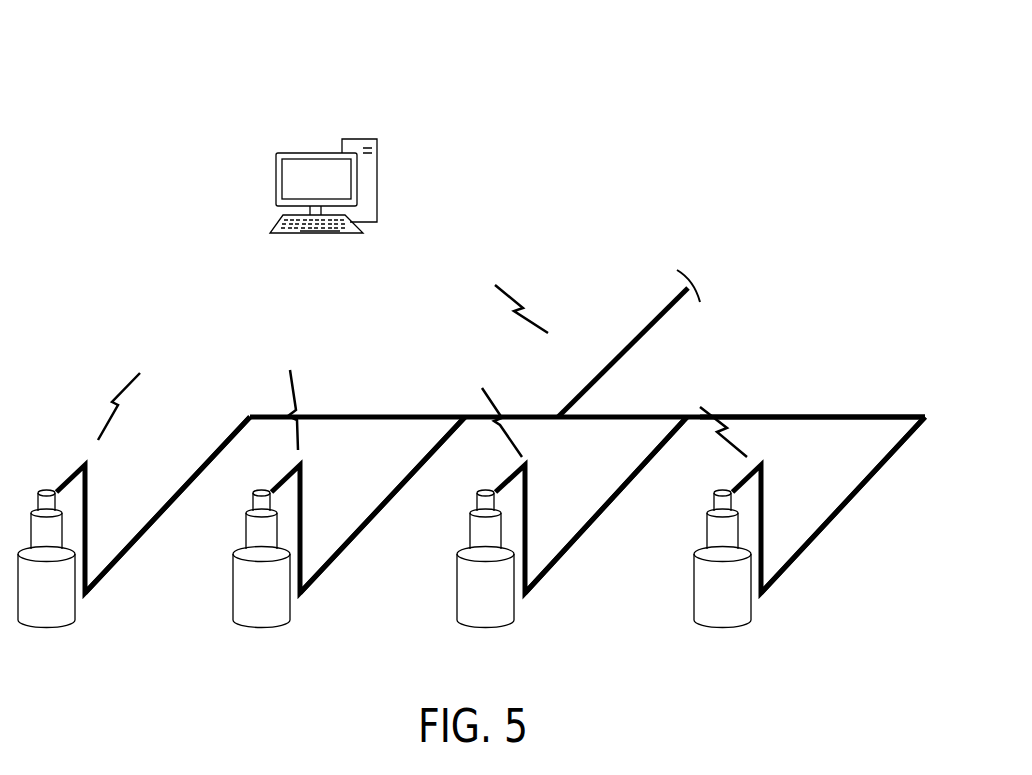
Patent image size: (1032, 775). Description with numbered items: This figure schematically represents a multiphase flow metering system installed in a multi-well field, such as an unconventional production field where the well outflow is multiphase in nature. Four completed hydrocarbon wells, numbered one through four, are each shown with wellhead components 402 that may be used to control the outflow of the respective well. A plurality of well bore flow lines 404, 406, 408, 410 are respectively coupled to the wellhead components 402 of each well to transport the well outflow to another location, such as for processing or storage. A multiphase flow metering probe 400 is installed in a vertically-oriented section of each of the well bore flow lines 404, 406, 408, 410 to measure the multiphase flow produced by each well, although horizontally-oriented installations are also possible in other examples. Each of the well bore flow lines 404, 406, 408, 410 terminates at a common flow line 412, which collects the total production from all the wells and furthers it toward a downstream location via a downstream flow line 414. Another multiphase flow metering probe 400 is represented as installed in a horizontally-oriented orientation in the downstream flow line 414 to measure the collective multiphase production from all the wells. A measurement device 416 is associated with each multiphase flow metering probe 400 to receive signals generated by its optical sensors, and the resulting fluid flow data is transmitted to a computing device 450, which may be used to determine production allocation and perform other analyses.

The multiphase flow metering probe 400 is at (90, 503).
The wellhead components 402 is at (76, 612).
The well bore flow line 404 is at (118, 560).
The well bore flow line 406 is at (321, 572).
The well bore flow line 408 is at (557, 561).
The well bore flow line 410 is at (783, 575).
The common flow line 412 is at (823, 413).
The downstream flow line 414 is at (647, 328).
The measurement device 416 is at (103, 418).
The computing device 450 is at (246, 144).